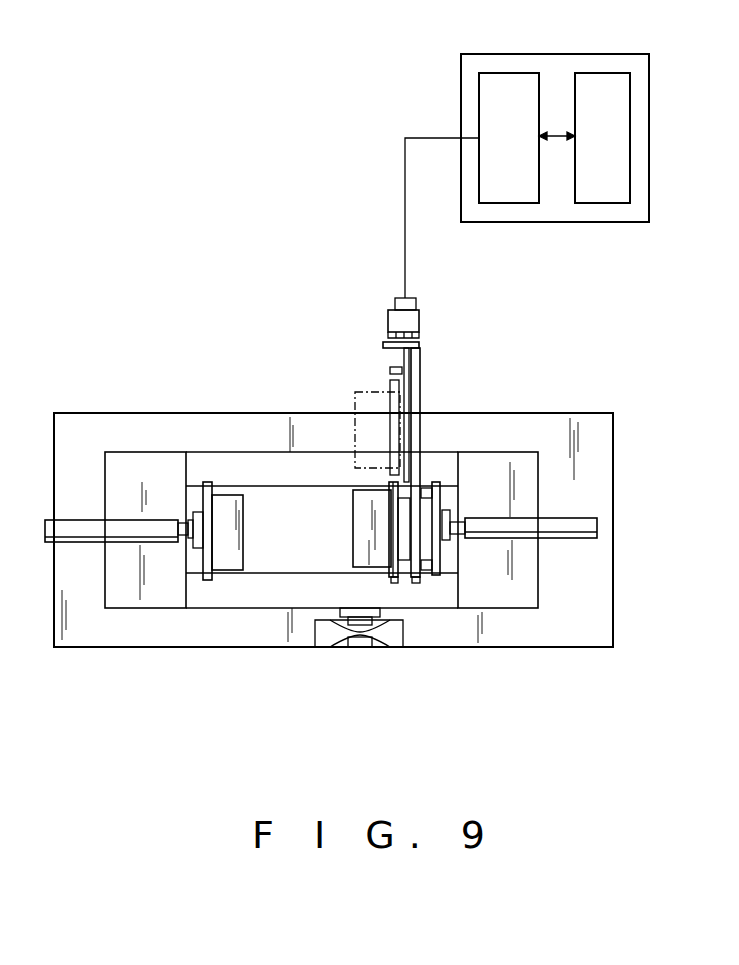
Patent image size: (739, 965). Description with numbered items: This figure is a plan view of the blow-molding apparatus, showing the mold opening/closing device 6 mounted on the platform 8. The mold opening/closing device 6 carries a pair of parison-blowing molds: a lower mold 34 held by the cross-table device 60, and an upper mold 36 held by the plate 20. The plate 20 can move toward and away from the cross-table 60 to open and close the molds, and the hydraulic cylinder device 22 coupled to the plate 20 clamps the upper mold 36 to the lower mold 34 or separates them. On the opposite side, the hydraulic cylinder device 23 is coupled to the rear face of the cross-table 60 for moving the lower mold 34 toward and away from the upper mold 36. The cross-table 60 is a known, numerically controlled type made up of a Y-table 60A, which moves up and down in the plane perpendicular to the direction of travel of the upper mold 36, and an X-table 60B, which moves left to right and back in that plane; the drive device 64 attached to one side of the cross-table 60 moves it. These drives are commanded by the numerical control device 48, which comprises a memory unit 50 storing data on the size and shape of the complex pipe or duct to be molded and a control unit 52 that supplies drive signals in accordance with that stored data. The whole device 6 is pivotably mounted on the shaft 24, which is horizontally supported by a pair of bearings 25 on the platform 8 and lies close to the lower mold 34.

The mold opening/closing device 6 is at (168, 595).
The platform 8 is at (613, 433).
The plate 20 is at (211, 500).
The hydraulic cylinder device 22 is at (65, 525).
The hydraulic cylinder device 23 is at (588, 517).
The shaft 24 is at (353, 650).
The bearings 25 is at (390, 633).
The lower mold 34 is at (353, 537).
The upper mold 36 is at (242, 520).
The numerical control device 48 is at (462, 96).
The memory unit 50 is at (607, 73).
The control unit 52 is at (509, 73).
The cross-table device 60 is at (444, 444).
The Y-table 60A is at (433, 576).
The X-table 60B is at (392, 578).
The drive device 64 is at (410, 323).